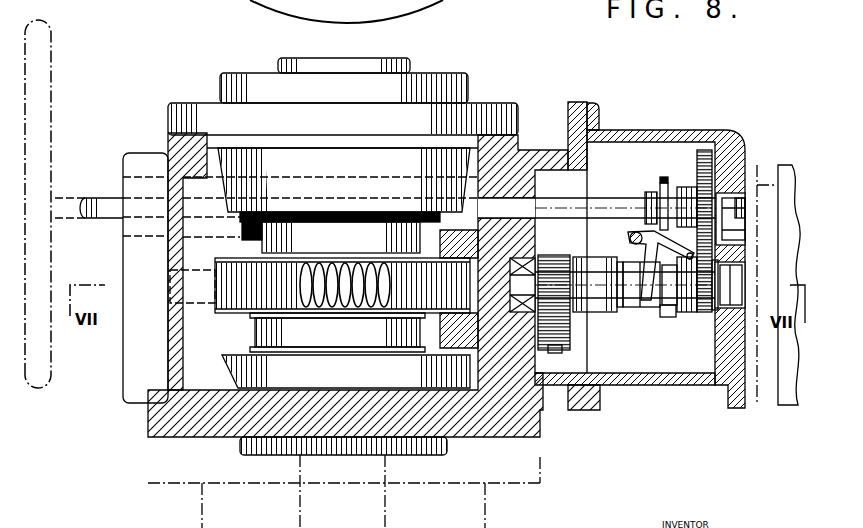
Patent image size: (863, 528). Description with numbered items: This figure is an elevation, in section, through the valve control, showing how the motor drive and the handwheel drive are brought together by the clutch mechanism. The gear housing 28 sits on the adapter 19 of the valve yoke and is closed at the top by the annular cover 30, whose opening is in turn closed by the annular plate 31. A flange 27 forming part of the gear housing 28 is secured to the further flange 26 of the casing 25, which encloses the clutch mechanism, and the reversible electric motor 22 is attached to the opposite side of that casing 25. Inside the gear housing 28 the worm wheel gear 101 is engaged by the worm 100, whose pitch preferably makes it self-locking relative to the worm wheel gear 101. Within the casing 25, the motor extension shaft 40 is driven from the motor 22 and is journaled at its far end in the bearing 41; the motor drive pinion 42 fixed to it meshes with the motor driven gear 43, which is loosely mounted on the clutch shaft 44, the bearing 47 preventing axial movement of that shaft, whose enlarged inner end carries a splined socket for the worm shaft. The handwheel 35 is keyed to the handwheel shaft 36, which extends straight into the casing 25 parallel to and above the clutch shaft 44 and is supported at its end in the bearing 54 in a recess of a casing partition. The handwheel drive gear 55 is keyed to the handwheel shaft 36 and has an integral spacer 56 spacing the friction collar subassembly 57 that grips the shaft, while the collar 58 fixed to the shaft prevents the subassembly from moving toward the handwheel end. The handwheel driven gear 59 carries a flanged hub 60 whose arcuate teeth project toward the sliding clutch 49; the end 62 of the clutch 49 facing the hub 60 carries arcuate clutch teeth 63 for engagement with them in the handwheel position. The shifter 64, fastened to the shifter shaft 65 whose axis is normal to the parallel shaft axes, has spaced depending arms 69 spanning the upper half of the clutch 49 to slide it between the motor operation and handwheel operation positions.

The adapter 19 is at (152, 469).
The reversible electric motor 22 is at (790, 165).
The casing 25 is at (652, 130).
The flange 26 is at (592, 104).
The flange 27 is at (576, 102).
The gear housing 28 is at (168, 150).
The annular cover 30 is at (488, 103).
The annular plate 31 is at (468, 75).
The handwheel 35 is at (53, 78).
The handwheel shaft 36 is at (105, 205).
The motor extension shaft 40 is at (589, 316).
The bearing 41 is at (523, 313).
The motor drive pinion 42 is at (568, 322).
The motor driven gear 43 is at (557, 352).
The clutch shaft 44 is at (740, 290).
The bearing 47 is at (735, 262).
The sliding clutch 49 is at (622, 318).
The bearing 54 is at (720, 192).
The handwheel drive gear 55 is at (708, 148).
The spacer 56 is at (688, 187).
The friction collar subassembly 57 is at (660, 186).
The collar 58 is at (645, 195).
The handwheel driven gear 59 is at (682, 314).
The flanged hub 60 is at (668, 305).
The end of clutch 62 is at (626, 316).
The arcuate clutch teeth 63 is at (664, 318).
The shifter 64 is at (628, 237).
The shifter shaft 65 is at (629, 240).
The depending arms 69 is at (662, 257).
The worm 100 is at (320, 318).
The worm wheel gear 101 is at (230, 318).